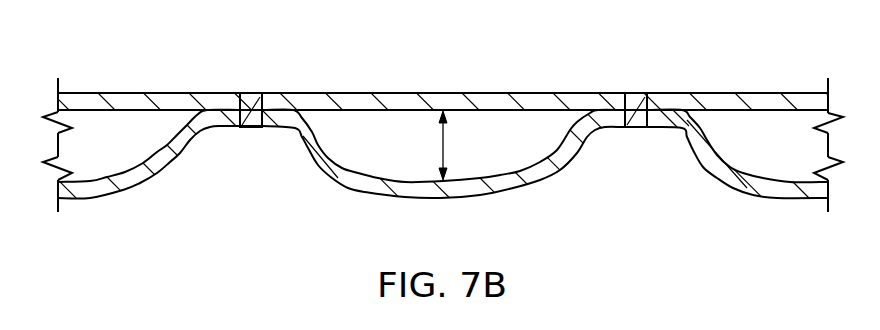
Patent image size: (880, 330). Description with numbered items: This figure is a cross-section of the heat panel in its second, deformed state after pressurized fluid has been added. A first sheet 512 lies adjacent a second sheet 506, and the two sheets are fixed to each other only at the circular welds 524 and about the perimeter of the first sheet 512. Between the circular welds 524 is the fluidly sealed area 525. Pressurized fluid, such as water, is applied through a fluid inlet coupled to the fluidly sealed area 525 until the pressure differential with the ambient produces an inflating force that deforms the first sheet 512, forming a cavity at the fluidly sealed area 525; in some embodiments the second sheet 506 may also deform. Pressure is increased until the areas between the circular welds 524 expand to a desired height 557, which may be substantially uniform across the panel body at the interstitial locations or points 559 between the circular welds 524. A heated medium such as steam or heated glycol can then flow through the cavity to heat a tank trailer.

The second sheet 506 is at (128, 97).
The interstitial locations or points 559 is at (397, 93).
The circular welds 524 is at (250, 100).
The first sheet 512 is at (783, 187).
The fluidly sealed area 525 is at (362, 165).
The desired height 557 is at (445, 147).